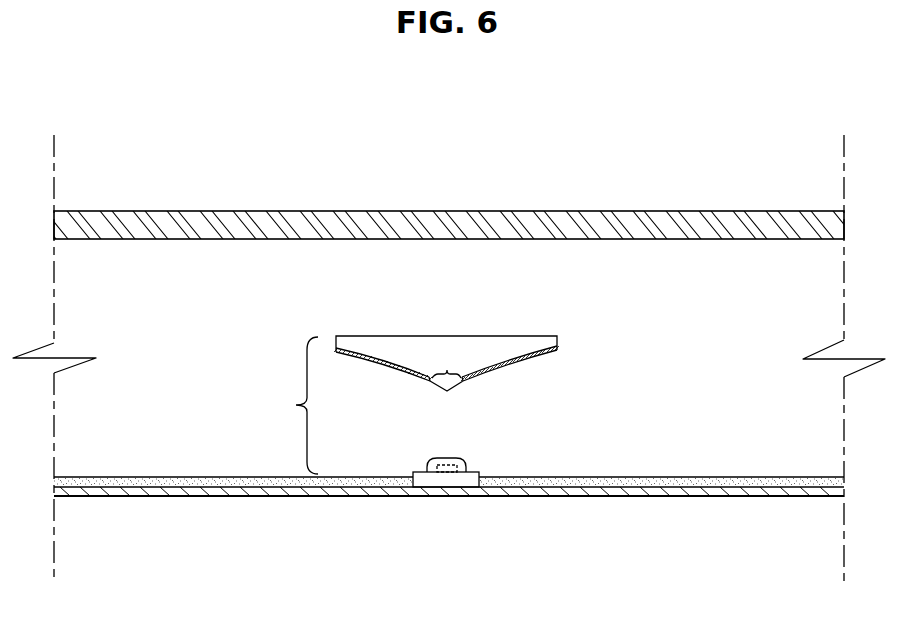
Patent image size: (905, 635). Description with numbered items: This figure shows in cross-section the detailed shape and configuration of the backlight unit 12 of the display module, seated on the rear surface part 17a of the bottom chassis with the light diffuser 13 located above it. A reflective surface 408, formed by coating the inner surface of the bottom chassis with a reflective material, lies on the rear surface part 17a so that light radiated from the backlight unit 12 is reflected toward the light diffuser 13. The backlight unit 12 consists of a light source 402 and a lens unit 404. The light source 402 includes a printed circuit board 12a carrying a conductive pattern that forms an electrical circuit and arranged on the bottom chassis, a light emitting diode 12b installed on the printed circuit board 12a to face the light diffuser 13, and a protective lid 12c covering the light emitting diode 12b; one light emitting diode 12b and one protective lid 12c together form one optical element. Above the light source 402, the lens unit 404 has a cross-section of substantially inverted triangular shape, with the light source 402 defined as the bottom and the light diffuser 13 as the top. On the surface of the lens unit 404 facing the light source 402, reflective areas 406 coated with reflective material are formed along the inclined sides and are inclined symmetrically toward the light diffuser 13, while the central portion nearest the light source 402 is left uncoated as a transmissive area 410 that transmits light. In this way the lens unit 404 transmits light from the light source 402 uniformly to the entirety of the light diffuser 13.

The light diffuser 13 is at (758, 227).
The lens unit 404 is at (492, 362).
The reflective areas 406 is at (375, 363).
The transmissive area 410 is at (447, 362).
The backlight unit 12 is at (295, 405).
The reflective surface 408 is at (128, 483).
The rear surface part 17a is at (333, 492).
The light source 402 is at (475, 494).
The printed circuit board 12a is at (453, 480).
The light emitting diode 12b is at (450, 460).
The protective lid 12c is at (437, 463).